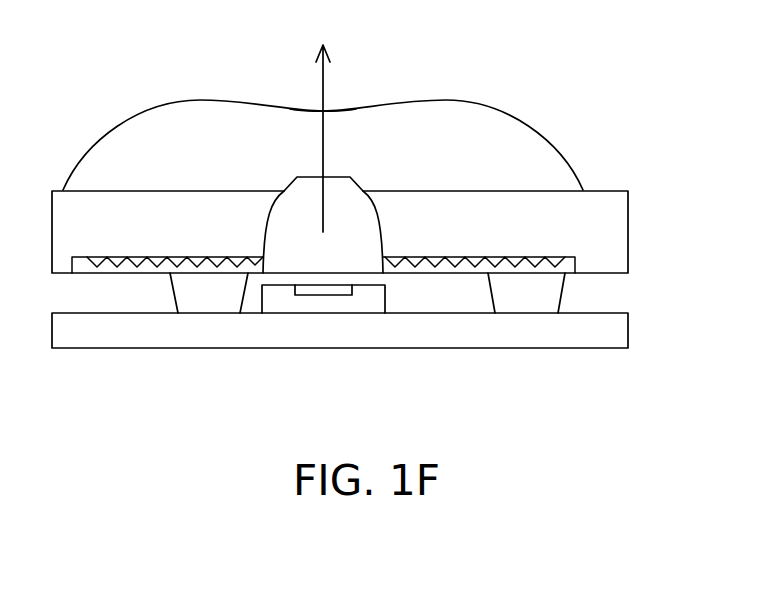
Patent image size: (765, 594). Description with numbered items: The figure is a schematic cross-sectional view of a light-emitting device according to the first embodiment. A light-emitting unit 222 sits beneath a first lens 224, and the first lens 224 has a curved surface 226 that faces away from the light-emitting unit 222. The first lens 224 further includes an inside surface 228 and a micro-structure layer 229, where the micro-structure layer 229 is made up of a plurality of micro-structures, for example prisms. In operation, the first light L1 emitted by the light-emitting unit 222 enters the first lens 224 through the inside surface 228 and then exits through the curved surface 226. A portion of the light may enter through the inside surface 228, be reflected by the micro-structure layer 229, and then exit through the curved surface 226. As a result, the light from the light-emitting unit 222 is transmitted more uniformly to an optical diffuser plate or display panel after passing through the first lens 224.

The light-emitting unit 222 is at (280, 295).
The first lens 224 is at (398, 112).
The curved surface 226 is at (283, 103).
The inside surface 228 is at (377, 230).
The micro-structure layer 229 is at (465, 270).
The first light L1 is at (325, 70).